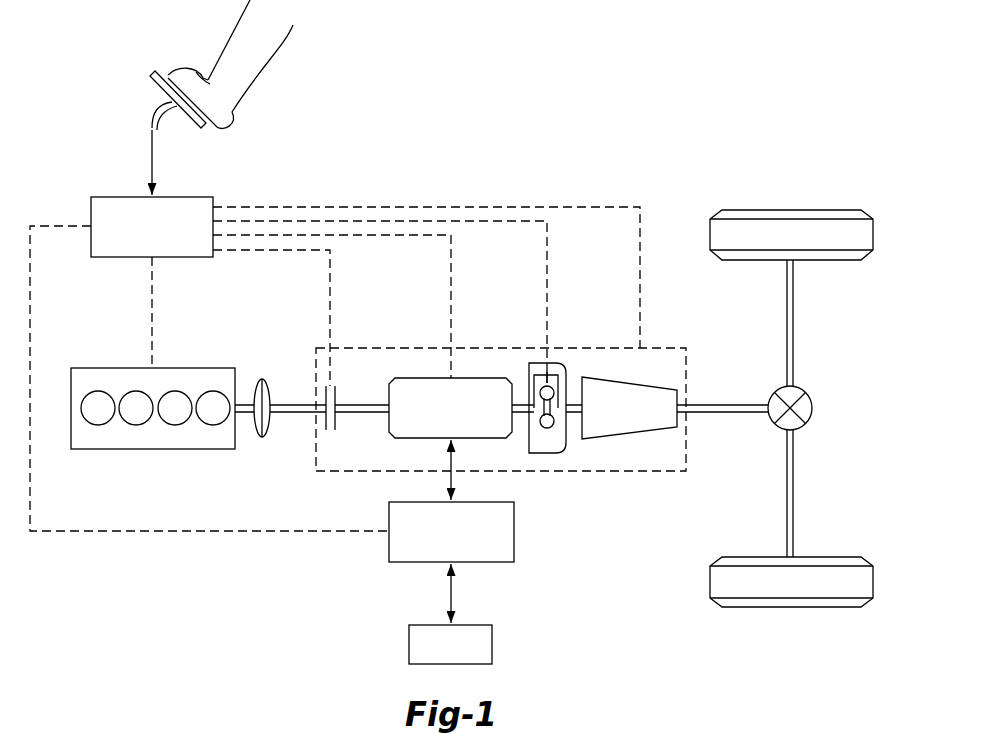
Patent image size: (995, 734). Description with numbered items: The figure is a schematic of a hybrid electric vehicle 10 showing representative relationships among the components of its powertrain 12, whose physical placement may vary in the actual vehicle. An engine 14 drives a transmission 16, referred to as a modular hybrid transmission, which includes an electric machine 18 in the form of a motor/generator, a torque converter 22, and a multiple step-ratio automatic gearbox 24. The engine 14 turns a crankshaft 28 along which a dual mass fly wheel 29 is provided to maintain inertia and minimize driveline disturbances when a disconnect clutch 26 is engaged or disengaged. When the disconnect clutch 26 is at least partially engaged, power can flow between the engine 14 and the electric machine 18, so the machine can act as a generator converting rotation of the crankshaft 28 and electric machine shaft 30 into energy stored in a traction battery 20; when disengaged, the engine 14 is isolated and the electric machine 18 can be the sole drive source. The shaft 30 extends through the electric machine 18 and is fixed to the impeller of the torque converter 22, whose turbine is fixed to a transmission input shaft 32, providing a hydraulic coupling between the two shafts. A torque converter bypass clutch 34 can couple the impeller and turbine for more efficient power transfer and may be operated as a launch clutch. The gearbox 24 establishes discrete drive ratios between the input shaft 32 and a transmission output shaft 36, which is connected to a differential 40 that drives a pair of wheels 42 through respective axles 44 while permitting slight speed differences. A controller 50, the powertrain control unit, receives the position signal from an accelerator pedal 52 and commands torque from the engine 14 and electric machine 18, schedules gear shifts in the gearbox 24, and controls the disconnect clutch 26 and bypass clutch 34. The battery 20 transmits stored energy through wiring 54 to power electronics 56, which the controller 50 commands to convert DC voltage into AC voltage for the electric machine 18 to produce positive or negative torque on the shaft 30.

The hybrid electric vehicle 10 is at (658, 146).
The powertrain 12 is at (269, 571).
The engine 14 is at (90, 368).
The transmission 16 is at (485, 348).
The electric machine 18 is at (428, 378).
The traction battery 20 is at (409, 645).
The torque converter 22 is at (546, 453).
The gearbox 24 is at (622, 437).
The disconnect clutch 26 is at (335, 431).
The crankshaft 28 is at (298, 404).
The dual mass fly wheel 29 is at (262, 378).
The electric machine shaft 30 is at (368, 404).
The transmission input shaft 32 is at (571, 404).
The torque converter bypass clutch 34 is at (547, 363).
The transmission output shaft 36 is at (738, 404).
The differential 40 is at (813, 408).
The wheels 42 is at (758, 210).
The axles 44 is at (795, 325).
The controller 50 is at (106, 197).
The accelerator pedal 52 is at (150, 88).
The wiring 54 is at (448, 595).
The power electronics 56 is at (514, 533).